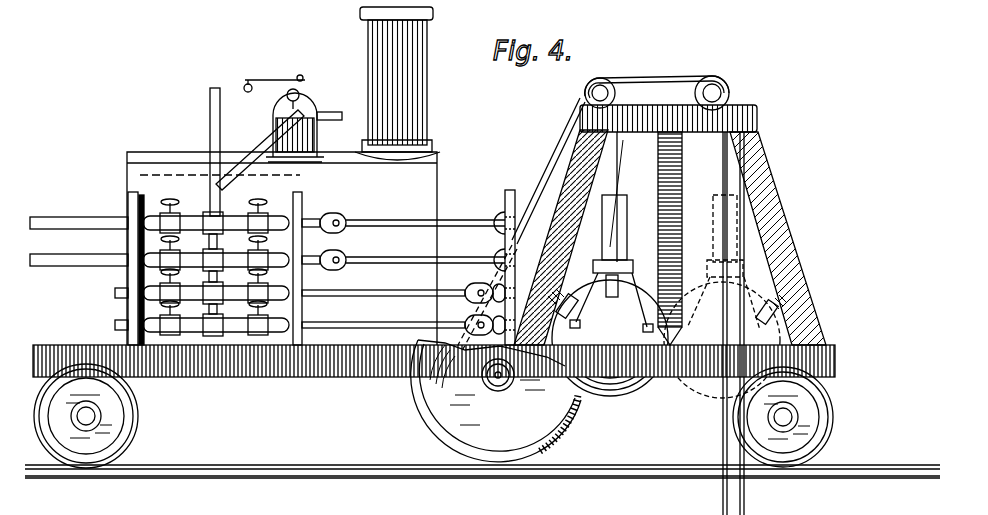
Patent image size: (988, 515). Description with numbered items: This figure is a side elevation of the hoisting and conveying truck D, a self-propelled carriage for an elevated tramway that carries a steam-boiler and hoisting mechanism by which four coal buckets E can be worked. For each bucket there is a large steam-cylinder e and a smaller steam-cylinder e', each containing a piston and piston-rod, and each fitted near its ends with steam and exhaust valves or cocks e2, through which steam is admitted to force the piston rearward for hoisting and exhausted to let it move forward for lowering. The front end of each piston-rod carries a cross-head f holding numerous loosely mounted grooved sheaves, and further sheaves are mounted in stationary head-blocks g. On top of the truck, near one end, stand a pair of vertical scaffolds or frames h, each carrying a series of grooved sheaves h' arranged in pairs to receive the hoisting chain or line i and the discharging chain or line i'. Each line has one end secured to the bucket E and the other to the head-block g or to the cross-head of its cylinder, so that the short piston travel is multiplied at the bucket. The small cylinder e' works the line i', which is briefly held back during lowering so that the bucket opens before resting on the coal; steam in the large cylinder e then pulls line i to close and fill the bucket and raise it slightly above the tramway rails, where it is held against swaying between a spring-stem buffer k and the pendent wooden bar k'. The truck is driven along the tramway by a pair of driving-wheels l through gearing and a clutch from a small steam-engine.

The hoisting and conveying truck D is at (308, 176).
The large steam-cylinder e is at (159, 265).
The steam and exhaust valves or cocks e2 is at (170, 212).
The small steam-cylinder e' is at (119, 302).
The cross-head f is at (325, 216).
The stationary head-block g is at (500, 262).
The vertical scaffold or frame h is at (670, 225).
The grooved sheaves h' is at (657, 93).
The hoisting chain or line i is at (660, 197).
The discharging chain or line i' is at (676, 224).
The spring buffer k is at (667, 301).
The pendent bar buffer k' is at (593, 212).
The hoisting-bucket E is at (666, 335).
The driving-wheel l is at (496, 401).